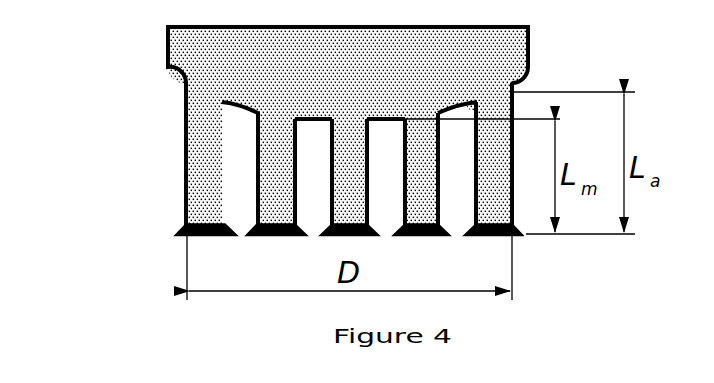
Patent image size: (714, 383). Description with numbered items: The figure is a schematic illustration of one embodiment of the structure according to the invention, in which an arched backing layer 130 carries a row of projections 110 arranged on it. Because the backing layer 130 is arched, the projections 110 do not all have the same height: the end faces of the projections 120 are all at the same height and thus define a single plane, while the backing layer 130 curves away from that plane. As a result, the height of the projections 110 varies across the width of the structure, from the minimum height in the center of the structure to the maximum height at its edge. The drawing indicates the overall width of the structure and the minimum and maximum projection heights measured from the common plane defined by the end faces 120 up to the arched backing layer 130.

The projections 110 is at (155, 180).
The end faces of the projections 120 is at (193, 253).
The arched backing layer 130 is at (152, 47).